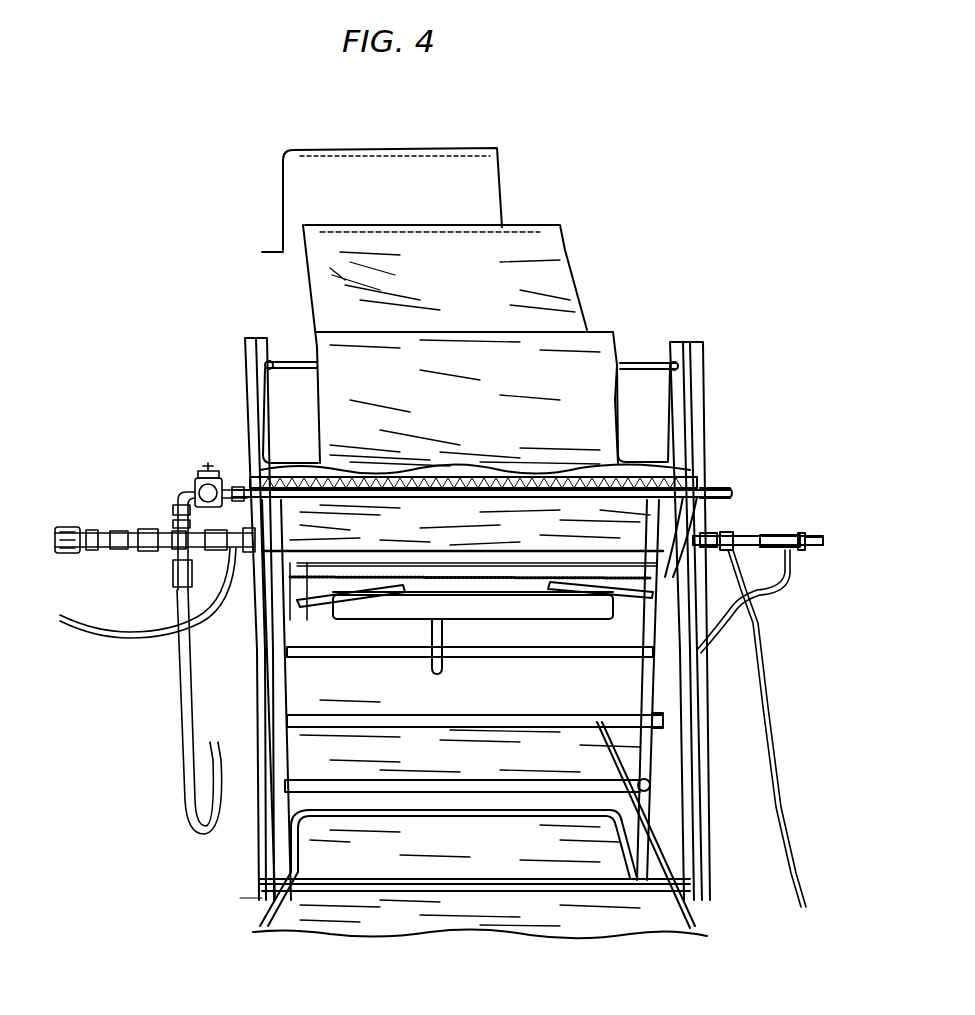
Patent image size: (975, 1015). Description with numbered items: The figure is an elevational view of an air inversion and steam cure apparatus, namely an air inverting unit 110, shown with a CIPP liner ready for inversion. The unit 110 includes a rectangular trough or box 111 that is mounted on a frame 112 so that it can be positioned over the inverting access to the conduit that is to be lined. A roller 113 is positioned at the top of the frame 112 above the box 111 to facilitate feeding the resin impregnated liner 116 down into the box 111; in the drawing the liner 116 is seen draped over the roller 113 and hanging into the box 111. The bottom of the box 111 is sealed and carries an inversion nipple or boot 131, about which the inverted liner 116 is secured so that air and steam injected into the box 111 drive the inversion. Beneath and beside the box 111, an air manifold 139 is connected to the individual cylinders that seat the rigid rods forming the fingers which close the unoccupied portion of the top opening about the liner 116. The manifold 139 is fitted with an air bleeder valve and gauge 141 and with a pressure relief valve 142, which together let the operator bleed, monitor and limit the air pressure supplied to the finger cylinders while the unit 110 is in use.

The air inverting unit 110 is at (752, 478).
The rectangular trough or box 111 is at (693, 515).
The frame 112 is at (690, 714).
The roller 113 is at (303, 338).
The resin impregnated liner 116 is at (552, 272).
The inversion nipple or boot 131 is at (360, 568).
The air manifold 139 is at (240, 473).
The air bleeder valve and gauge 141 is at (190, 490).
The pressure relief valve 142 is at (207, 470).